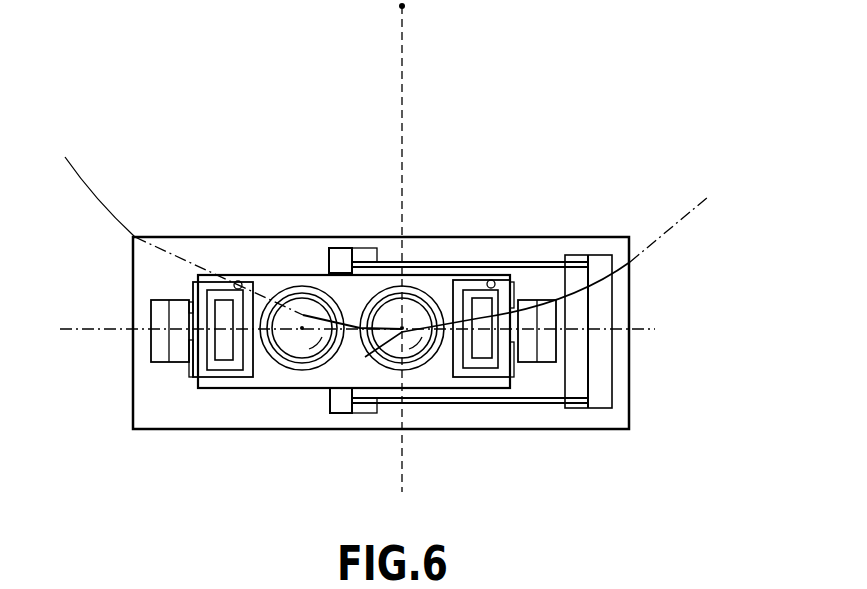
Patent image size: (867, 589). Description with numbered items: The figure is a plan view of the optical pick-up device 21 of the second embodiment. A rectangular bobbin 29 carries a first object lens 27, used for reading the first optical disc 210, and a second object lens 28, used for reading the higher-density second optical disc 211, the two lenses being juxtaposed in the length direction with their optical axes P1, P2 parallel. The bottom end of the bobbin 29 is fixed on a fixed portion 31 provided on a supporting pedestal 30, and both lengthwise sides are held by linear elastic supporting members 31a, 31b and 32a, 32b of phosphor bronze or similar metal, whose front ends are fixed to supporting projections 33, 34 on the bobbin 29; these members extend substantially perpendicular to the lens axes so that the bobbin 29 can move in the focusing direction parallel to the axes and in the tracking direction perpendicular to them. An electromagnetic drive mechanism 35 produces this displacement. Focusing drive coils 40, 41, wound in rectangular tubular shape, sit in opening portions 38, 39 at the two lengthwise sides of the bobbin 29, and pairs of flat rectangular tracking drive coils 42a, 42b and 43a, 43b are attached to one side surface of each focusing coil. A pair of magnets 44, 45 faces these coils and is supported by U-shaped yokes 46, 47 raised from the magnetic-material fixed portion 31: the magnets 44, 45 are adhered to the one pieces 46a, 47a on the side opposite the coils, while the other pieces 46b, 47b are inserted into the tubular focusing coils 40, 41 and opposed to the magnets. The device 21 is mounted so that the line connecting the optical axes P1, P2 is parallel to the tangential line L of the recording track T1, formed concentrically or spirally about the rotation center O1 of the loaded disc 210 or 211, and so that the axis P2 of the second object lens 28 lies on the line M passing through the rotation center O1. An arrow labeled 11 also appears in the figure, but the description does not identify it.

The optical pick-up device 21 is at (660, 178).
The first optical disc 210 is at (573, 277).
The second optical disc 211 is at (677, 218).
The incident light 11 is at (578, 306).
The first object lens 27 is at (302, 306).
The second object lens 28 is at (393, 290).
The bobbin 29 is at (272, 378).
The supporting pedestal 30 is at (622, 367).
The fixed portion 31 is at (602, 388).
The elastic supporting member 31a is at (499, 219).
The elastic supporting member 32a is at (513, 262).
The elastic supporting member 31b is at (470, 438).
The elastic supporting member 32b is at (433, 405).
The supporting projection 33 is at (345, 258).
The supporting projection 34 is at (340, 405).
The electromagnetic drive mechanism 35 is at (148, 380).
The opening portion 38 is at (495, 283).
The opening portion 39 is at (242, 283).
The focusing drive coil 40 is at (480, 285).
The focusing drive coil 41 is at (227, 287).
The tracking drive coil 42a is at (516, 284).
The tracking drive coil 42b is at (527, 373).
The tracking drive coil 43a is at (192, 293).
The tracking drive coil 43b is at (193, 367).
The magnet 44 is at (556, 343).
The magnet 45 is at (180, 318).
The yoke 46 is at (573, 403).
The yoke piece 46a is at (550, 323).
The yoke piece 46b is at (482, 353).
The yoke 47 is at (153, 343).
The yoke piece 47a is at (160, 302).
The yoke piece 47b is at (225, 358).
The tangential line L is at (349, 329).
The line passing through the rotation center M is at (404, 263).
The rotation center O1 is at (419, 12).
The optical axis P1 is at (302, 352).
The optical axis P2 is at (391, 336).
The recording track T1 is at (78, 177).